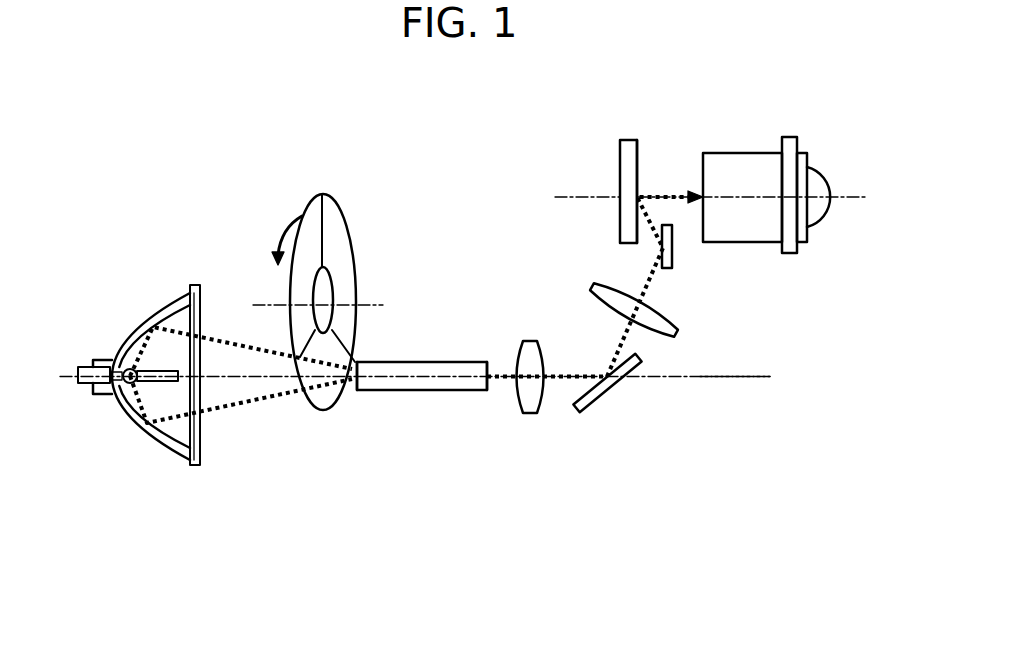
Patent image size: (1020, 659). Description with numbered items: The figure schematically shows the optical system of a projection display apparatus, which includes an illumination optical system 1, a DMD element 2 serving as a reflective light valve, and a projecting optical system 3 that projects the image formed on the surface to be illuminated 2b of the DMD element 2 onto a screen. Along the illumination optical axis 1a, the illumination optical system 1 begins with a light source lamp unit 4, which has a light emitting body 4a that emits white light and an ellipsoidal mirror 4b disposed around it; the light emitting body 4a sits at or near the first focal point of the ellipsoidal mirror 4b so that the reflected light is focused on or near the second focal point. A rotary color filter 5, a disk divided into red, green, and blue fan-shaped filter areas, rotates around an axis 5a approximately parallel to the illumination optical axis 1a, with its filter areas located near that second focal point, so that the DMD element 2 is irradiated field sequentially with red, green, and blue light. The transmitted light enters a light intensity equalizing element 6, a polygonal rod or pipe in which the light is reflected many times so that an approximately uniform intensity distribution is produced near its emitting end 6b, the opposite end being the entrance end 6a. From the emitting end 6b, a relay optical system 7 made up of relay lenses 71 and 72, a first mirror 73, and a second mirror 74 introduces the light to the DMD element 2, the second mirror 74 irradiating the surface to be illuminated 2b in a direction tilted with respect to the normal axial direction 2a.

The illumination optical system 1 is at (418, 509).
The illumination optical axis 1a is at (748, 375).
The DMD element 2 is at (620, 160).
The axial direction 2a is at (570, 190).
The surface to be illuminated 2b is at (640, 167).
The projecting optical system 3 is at (815, 130).
The light source lamp unit 4 is at (215, 444).
The light emitting body 4a is at (112, 407).
The ellipsoidal mirror 4b is at (175, 443).
The rotary color filter 5 is at (303, 215).
The axis 5a is at (383, 303).
The light intensity equalizing element 6 is at (477, 347).
The incident end face 6a is at (358, 393).
The emitting end 6b is at (489, 394).
The relay optical system 7 is at (606, 325).
The relay lens 71 is at (538, 402).
The relay lens 72 is at (610, 298).
The first mirror 73 is at (610, 383).
The second mirror 74 is at (662, 250).